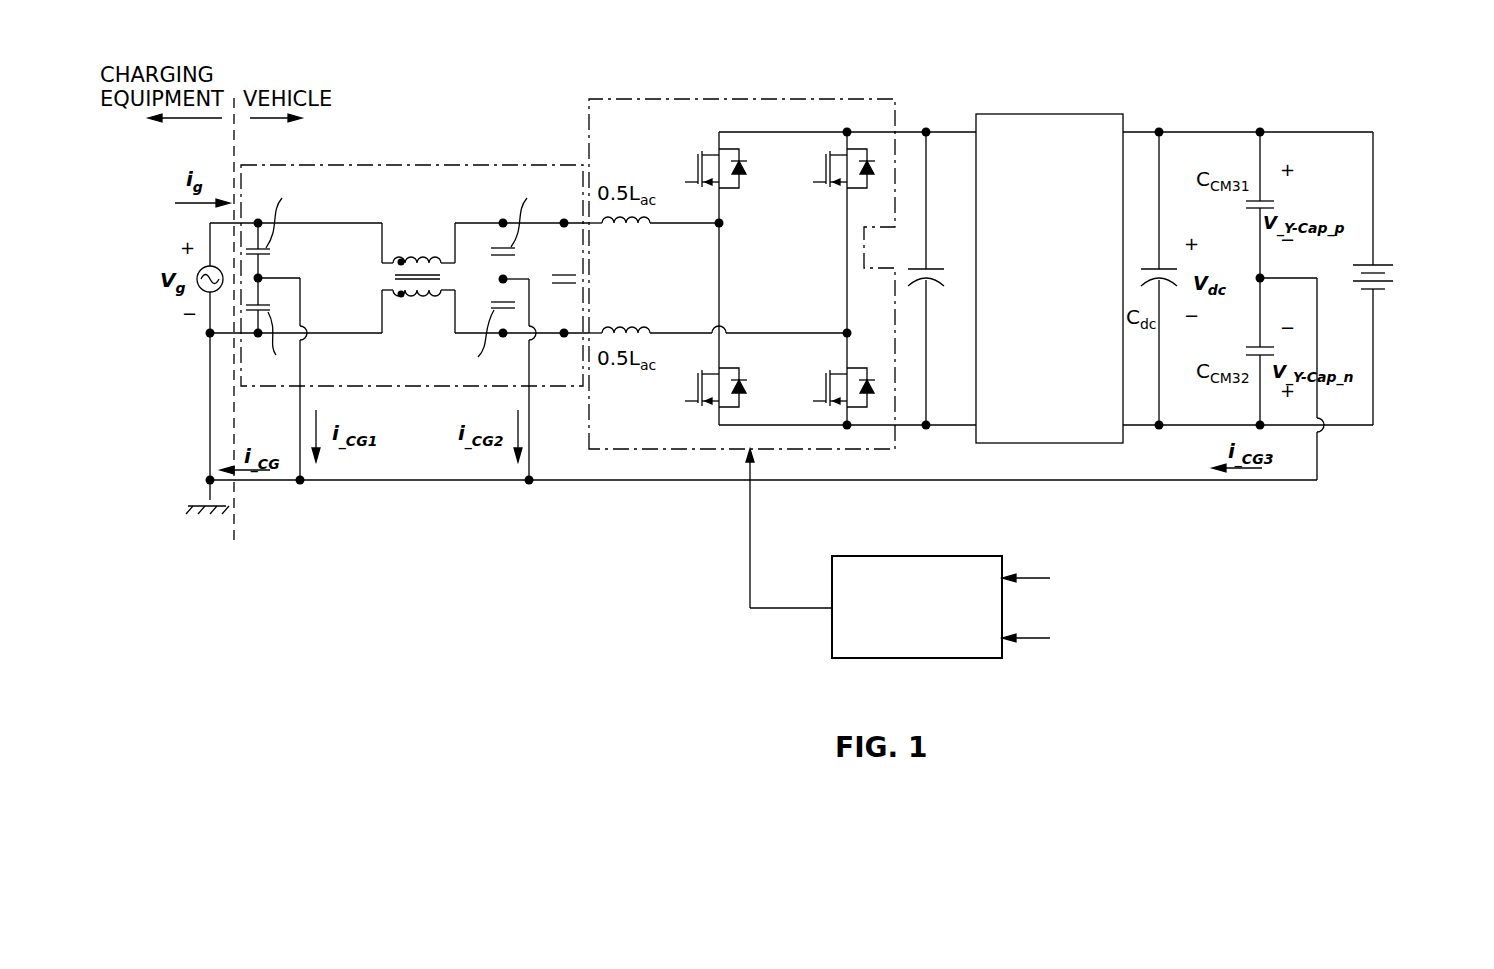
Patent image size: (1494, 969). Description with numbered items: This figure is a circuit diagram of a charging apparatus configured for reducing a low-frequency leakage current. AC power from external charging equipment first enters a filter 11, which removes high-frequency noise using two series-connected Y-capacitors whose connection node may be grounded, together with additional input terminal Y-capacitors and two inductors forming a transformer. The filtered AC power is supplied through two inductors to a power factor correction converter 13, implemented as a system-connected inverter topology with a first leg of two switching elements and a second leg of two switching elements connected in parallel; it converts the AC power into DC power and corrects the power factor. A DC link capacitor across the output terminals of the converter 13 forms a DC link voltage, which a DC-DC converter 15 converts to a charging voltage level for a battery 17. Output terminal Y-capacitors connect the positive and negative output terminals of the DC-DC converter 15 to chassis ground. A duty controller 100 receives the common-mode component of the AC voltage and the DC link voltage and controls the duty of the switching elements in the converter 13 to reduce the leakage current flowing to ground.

The filter 11 is at (470, 165).
The power factor correction (PFC) converter 13 is at (815, 99).
The DC-DC converter 15 is at (1049, 114).
The battery 17 is at (1394, 276).
The duty controller 100 is at (832, 645).